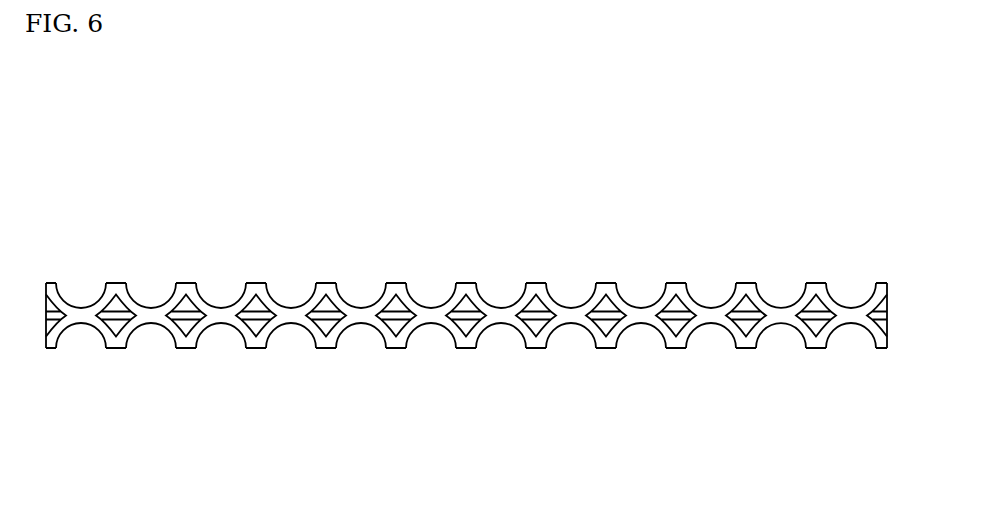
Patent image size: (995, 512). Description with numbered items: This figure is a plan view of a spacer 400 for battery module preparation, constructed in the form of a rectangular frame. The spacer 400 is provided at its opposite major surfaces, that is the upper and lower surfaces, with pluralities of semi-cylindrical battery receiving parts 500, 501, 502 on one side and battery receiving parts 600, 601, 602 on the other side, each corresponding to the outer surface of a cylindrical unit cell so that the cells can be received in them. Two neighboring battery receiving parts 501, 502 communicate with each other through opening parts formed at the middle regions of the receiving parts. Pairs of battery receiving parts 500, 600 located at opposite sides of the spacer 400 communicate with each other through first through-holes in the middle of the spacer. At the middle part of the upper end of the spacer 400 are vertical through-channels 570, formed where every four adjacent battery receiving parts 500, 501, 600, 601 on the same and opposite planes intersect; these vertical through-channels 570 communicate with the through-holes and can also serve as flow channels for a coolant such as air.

The spacer 400 is at (68, 124).
The battery receiving part 600 is at (223, 290).
The battery receiving part 601 is at (152, 288).
The battery receiving part 602 is at (293, 292).
The battery receiving part 500 is at (218, 347).
The battery receiving part 501 is at (142, 345).
The battery receiving part 502 is at (292, 347).
The vertical through-channel 570 is at (173, 347).